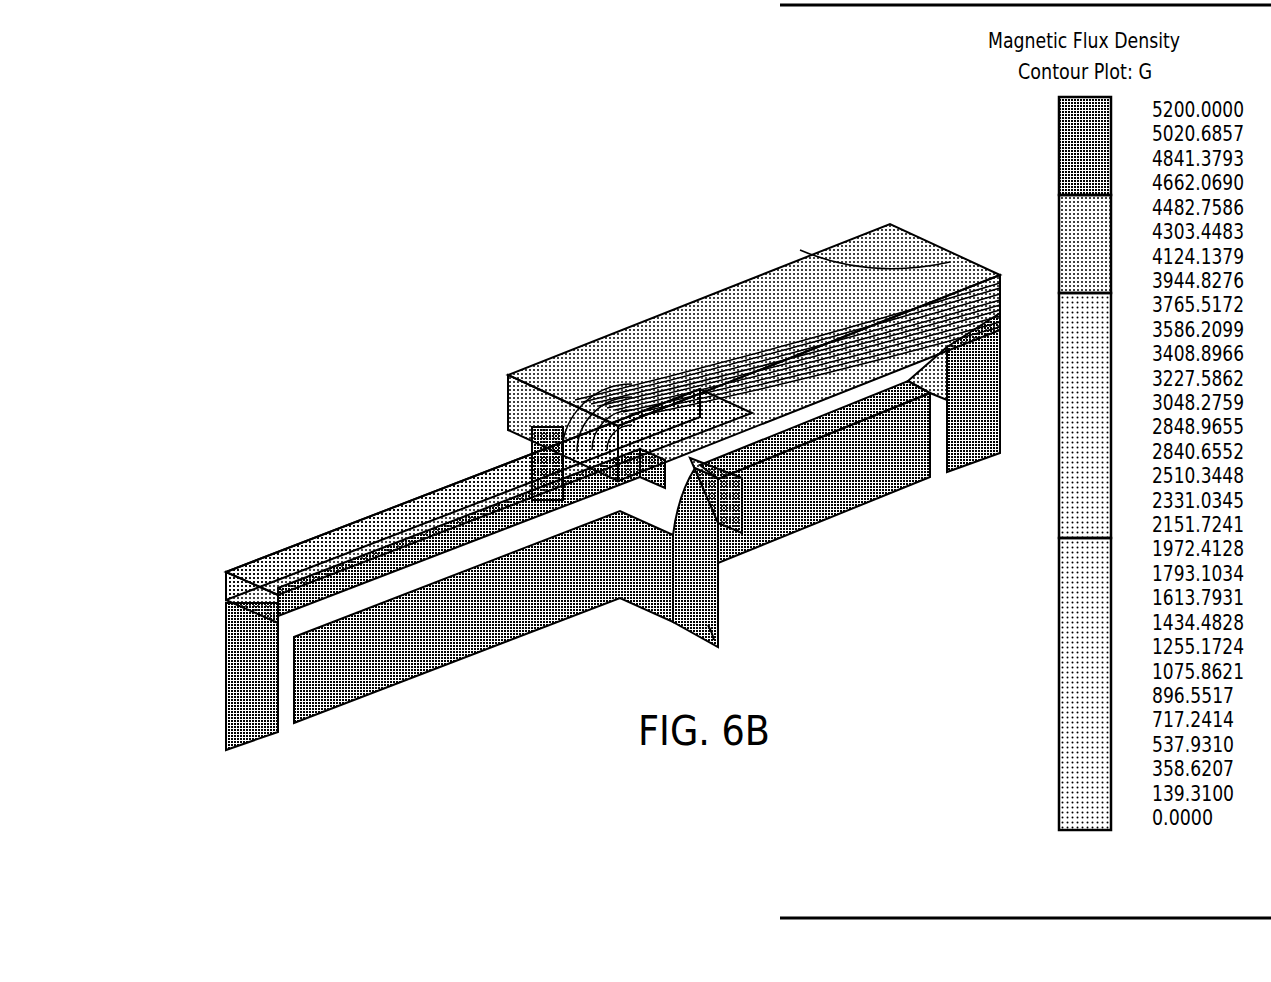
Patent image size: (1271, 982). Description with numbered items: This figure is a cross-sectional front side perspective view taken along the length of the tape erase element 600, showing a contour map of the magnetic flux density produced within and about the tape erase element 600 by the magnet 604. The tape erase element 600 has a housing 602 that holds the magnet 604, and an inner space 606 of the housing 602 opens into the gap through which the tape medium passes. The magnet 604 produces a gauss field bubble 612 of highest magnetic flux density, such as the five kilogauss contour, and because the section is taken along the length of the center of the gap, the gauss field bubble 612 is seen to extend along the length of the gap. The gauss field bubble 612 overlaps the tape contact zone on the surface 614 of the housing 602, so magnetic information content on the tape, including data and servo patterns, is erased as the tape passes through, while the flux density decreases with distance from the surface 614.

The tape erase element 600 is at (483, 363).
The housing 602 is at (698, 594).
The magnet 604 is at (908, 393).
The inner space 606 is at (643, 440).
The gauss field bubble 612 is at (631, 478).
The surface 614 is at (557, 425).